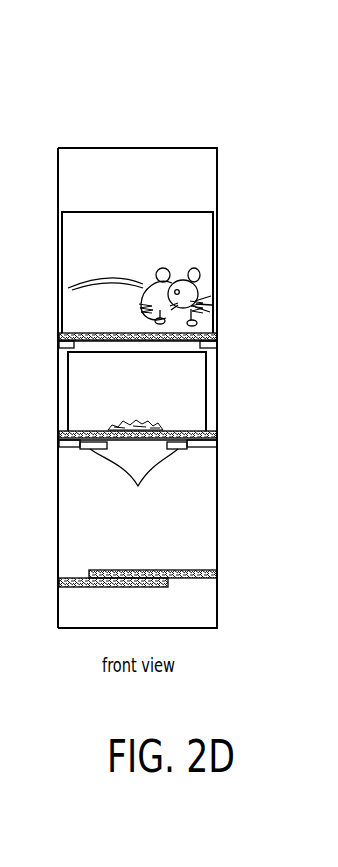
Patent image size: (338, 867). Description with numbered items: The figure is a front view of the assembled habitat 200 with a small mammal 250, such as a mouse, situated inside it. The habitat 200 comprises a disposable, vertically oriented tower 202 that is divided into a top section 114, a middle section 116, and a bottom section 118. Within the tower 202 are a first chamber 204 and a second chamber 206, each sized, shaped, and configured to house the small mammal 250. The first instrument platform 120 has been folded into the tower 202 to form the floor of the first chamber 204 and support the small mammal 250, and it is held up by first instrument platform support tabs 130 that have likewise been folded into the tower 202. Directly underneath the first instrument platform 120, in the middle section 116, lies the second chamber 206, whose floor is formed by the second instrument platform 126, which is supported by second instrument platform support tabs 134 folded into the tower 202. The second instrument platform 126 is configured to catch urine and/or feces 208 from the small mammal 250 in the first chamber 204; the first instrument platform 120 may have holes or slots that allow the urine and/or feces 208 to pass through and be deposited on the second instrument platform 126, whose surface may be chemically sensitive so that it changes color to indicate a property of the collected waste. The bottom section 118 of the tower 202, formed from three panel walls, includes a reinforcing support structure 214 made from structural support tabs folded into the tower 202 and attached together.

The habitat 200 is at (170, 339).
The tower 202 is at (78, 128).
The first chamber 204 is at (78, 233).
The small mammal 250 is at (200, 265).
The first instrument platform 120 is at (80, 333).
The first instrument platform support tabs 130 is at (65, 347).
The top section 114 is at (246, 269).
The middle section 116 is at (246, 388).
The bottom section 118 is at (246, 510).
The second chamber 206 is at (82, 404).
The urine and/or feces 208 is at (122, 423).
The second instrument platform 126 is at (77, 449).
The second instrument platform support tabs 134 is at (134, 488).
The reinforcing support structure 214 is at (216, 576).